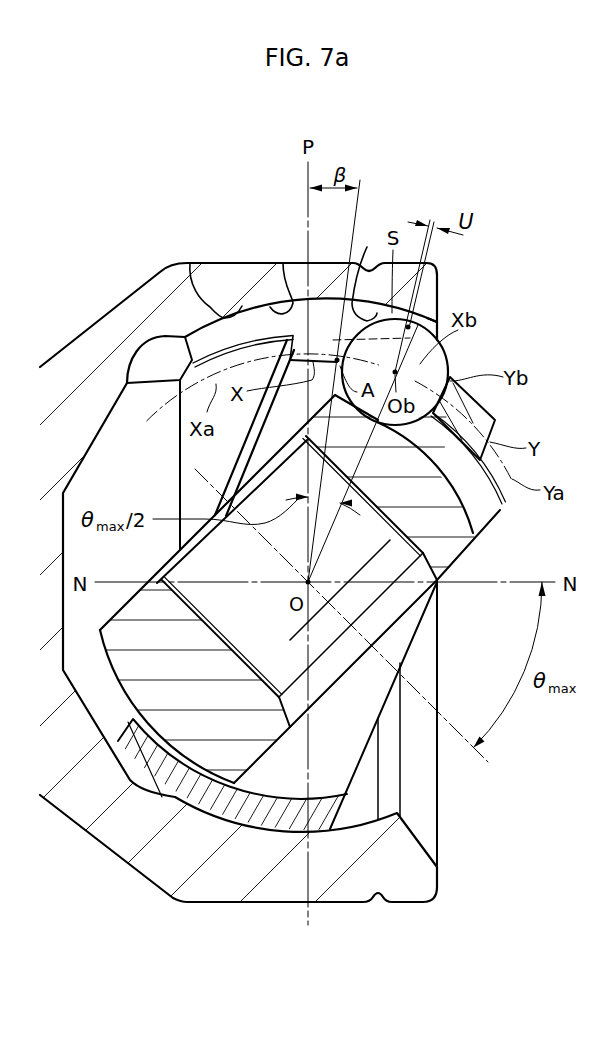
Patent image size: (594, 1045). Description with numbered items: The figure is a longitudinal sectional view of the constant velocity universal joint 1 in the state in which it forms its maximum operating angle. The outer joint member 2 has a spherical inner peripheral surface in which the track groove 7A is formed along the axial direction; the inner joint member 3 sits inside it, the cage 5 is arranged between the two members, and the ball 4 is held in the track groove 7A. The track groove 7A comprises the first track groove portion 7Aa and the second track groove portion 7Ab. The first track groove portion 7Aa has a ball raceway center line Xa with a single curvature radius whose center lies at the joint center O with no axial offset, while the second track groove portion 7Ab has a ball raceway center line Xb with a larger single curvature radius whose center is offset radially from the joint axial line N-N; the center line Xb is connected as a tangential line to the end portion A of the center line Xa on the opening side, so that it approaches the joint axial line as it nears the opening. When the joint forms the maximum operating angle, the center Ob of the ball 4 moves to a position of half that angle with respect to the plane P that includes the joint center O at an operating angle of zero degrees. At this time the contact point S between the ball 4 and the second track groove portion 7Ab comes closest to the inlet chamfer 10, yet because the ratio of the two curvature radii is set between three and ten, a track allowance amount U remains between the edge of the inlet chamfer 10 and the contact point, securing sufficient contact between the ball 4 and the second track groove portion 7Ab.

The constant velocity universal joint 1 is at (268, 200).
The outer joint member 2 is at (237, 263).
The inner joint member (inner race) 3 is at (464, 550).
The ball 4 is at (452, 363).
The cage 5 is at (490, 412).
The track groove 7A is at (290, 264).
The first track groove portion 7Aa is at (194, 264).
The second track groove portion 7Ab is at (367, 247).
The inlet chamfer 10 is at (440, 317).